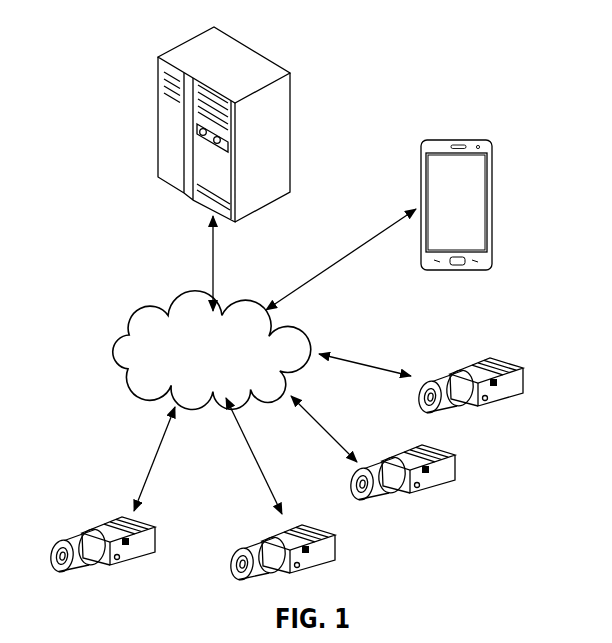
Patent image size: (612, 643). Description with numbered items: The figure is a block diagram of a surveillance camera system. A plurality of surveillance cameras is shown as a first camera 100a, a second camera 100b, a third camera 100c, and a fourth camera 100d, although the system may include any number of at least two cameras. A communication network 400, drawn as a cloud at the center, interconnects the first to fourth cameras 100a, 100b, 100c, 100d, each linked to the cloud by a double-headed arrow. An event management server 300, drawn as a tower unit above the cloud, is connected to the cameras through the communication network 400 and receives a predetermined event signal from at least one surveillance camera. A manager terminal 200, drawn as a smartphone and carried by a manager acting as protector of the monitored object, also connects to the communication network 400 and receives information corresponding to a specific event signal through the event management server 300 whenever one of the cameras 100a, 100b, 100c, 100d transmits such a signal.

The first camera 100a is at (142, 518).
The second camera 100b is at (322, 528).
The third camera 100c is at (441, 450).
The fourth camera 100d is at (511, 362).
The manager terminal 200 is at (472, 143).
The event management server 300 is at (252, 50).
The communication network 400 is at (288, 323).